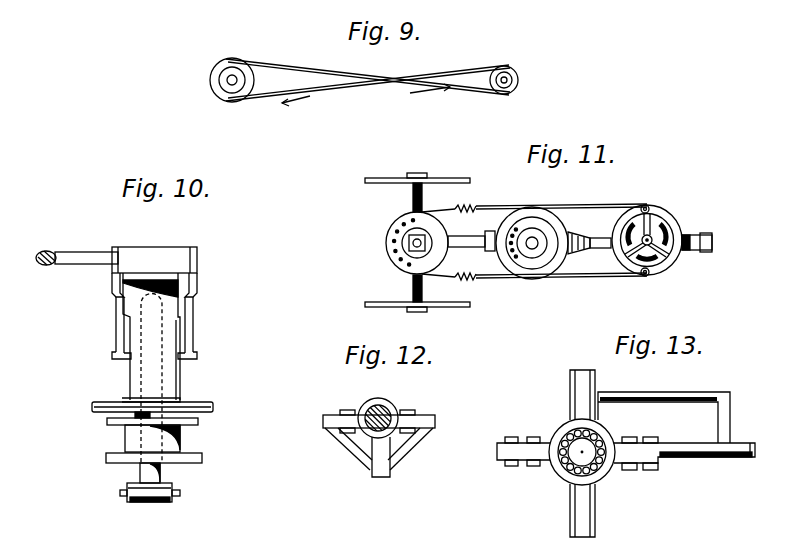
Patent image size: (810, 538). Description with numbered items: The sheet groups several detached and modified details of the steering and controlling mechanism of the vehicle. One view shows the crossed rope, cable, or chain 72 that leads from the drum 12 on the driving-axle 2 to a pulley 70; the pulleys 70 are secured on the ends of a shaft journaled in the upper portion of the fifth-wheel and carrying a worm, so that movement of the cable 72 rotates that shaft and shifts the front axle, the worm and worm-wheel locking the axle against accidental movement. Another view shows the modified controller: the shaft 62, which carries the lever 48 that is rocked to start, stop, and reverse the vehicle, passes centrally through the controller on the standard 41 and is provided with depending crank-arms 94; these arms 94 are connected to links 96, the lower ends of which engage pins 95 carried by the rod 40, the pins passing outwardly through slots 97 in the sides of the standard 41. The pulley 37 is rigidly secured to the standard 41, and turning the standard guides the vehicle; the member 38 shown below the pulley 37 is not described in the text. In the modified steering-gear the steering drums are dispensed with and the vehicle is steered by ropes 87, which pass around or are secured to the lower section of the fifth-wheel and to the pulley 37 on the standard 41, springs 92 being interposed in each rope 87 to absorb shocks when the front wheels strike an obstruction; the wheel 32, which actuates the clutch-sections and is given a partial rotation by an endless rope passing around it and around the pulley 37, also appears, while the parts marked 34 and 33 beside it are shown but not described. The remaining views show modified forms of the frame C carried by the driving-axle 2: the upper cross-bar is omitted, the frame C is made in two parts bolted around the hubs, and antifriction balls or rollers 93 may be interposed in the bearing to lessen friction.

In FIG. 9, the drum 12 is at (254, 80).
In FIG. 9, the pulley 70 is at (518, 80).
In FIG. 9, the rope, cable or chain 72 is at (370, 86).
In FIG. 10, the shaft 62 is at (92, 256).
In FIG. 10, the lever 48 is at (43, 267).
In FIG. 10, the crank-arms 94 is at (111, 281).
In FIG. 10, the links 96 is at (130, 338).
In FIG. 10, the slots 97 is at (114, 348).
In FIG. 10, the pins 95 is at (112, 359).
In FIG. 10, the standard 41 is at (181, 385).
In FIG. 11, the standard 41 is at (553, 232).
In FIG. 10, the pulley 37 is at (215, 408).
In FIG. 11, the pulley 37 is at (550, 279).
In FIG. 10, the collar 38 is at (198, 423).
In FIG. 10, the rod 40 is at (162, 478).
In FIG. 11, the springs 92 is at (468, 204).
In FIG. 11, the ropes 87 is at (503, 208).
In FIG. 11, the wedge block 34 is at (598, 250).
In FIG. 11, the wheel 32 is at (683, 233).
In FIG. 11, the pin 33 is at (648, 278).
In FIG. 12, the driving-axle 2 is at (393, 414).
In FIG. 12, the frame C is at (392, 462).
In FIG. 13, the frame C is at (607, 431).
In FIG. 13, the antifriction balls or rollers 93 is at (561, 472).